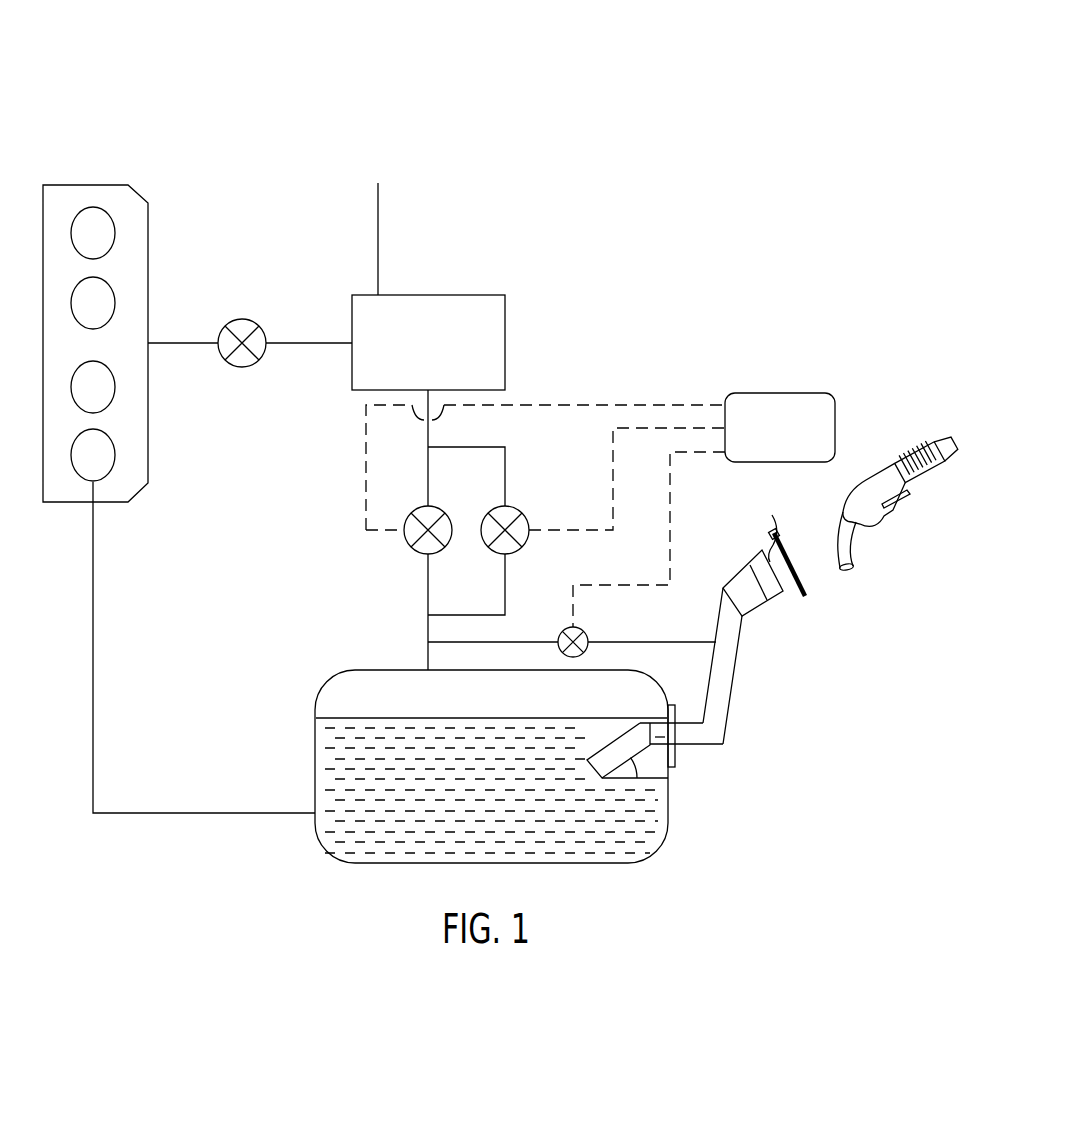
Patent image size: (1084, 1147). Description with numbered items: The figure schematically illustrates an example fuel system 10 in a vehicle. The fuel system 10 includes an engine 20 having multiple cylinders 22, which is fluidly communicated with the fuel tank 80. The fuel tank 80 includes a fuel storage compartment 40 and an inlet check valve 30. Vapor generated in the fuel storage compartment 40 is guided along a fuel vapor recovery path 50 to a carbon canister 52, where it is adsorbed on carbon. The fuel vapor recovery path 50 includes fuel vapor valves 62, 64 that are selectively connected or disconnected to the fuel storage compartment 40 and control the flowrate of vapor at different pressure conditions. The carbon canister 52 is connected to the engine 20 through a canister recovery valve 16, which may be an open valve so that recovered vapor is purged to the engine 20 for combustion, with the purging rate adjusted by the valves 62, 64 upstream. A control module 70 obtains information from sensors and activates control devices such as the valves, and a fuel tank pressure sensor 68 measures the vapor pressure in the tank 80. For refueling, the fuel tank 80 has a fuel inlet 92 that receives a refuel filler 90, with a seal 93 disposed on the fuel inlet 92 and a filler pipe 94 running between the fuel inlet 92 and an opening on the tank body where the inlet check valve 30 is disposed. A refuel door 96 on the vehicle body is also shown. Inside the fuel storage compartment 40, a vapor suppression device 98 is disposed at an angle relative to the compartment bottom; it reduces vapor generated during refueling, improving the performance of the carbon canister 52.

The fuel system 10 is at (652, 38).
The canister recovery valve 16 is at (244, 320).
The engine 20 is at (129, 177).
The cylinders 22 is at (107, 233).
The inlet check valve 30 is at (655, 740).
The fuel storage compartment 40 is at (655, 838).
The fuel vapor recovery path 50 is at (428, 586).
The carbon canister 52 is at (452, 295).
The fuel vapor valve 62 is at (430, 506).
The fuel vapor valve 64 is at (507, 506).
The fuel tank pressure sensor 68 is at (573, 628).
The control module 70 is at (795, 393).
The fuel tank 80 is at (830, 750).
The refuel filler 90 is at (887, 520).
The fuel inlet 92 is at (768, 548).
The seal 93 is at (755, 565).
The filler pipe 94 is at (722, 690).
The refuel door 96 is at (802, 582).
The vapor suppression device 98 is at (613, 747).